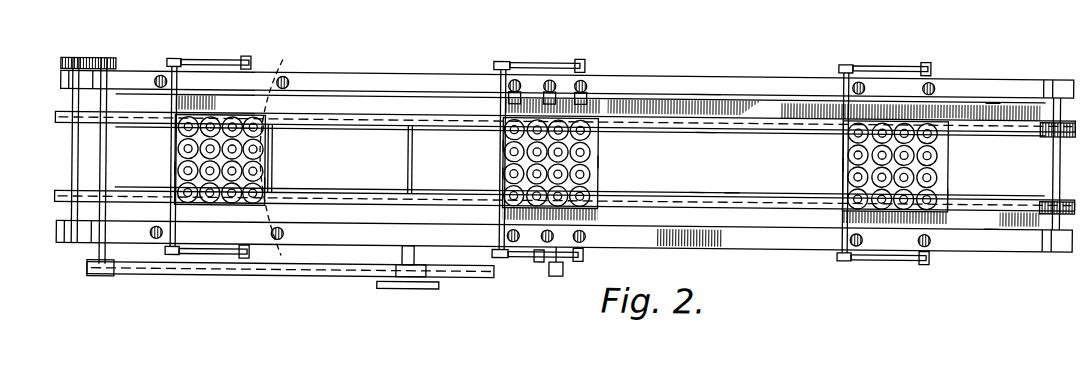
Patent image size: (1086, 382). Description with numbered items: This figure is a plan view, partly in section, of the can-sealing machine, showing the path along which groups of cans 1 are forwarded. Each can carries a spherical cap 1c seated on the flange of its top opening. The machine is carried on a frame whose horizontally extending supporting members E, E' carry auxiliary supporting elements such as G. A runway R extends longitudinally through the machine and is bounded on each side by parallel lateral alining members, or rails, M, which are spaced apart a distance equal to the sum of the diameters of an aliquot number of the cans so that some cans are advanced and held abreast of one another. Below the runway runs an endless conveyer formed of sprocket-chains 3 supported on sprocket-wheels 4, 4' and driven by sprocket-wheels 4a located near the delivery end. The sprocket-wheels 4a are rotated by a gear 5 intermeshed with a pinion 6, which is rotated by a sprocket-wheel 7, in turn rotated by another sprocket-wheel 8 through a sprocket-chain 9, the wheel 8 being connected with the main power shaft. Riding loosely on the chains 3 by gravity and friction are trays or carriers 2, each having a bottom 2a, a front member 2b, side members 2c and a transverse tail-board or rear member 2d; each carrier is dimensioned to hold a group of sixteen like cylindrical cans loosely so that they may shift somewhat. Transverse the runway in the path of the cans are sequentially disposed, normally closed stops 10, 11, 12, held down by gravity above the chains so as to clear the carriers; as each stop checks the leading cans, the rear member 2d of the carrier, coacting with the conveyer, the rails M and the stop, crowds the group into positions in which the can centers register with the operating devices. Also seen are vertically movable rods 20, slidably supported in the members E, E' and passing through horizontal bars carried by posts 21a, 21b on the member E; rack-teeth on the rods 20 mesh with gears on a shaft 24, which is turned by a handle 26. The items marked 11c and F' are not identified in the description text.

The can 1 is at (265, 150).
The spherical cap 1c is at (503, 148).
The tray or carrier 2 is at (266, 165).
The bottom 2a is at (950, 190).
The front member 2b is at (175, 172).
The side members 2c is at (290, 155).
The transverse tail-board or rear member 2d is at (266, 186).
The sprocket-chains 3 is at (750, 112).
The sprocket-wheel 4 is at (1041, 144).
The sprocket-wheel 4' is at (1047, 191).
The sprocket-wheels 4a is at (62, 122).
The gear 5 is at (80, 62).
The pinion 6 is at (108, 62).
The sprocket-wheel 7 is at (90, 268).
The sprocket-wheel 8 is at (425, 267).
The sprocket-chain 9 is at (225, 279).
The stop 10 is at (845, 66).
The stop 11 is at (500, 64).
The clamp plate 11c is at (538, 263).
The stop 12 is at (160, 84).
The vertically movable rods 20 is at (550, 80).
The post 21a is at (586, 82).
The post 21b is at (516, 80).
The shaft 24 is at (575, 66).
The handle 26 is at (557, 277).
The supporting member E is at (565, 189).
The supporting member E' is at (708, 70).
The position F' is at (705, 147).
The auxiliary supporting element G is at (695, 183).
The runway R is at (732, 177).
The lateral alining members or rails M is at (995, 98).